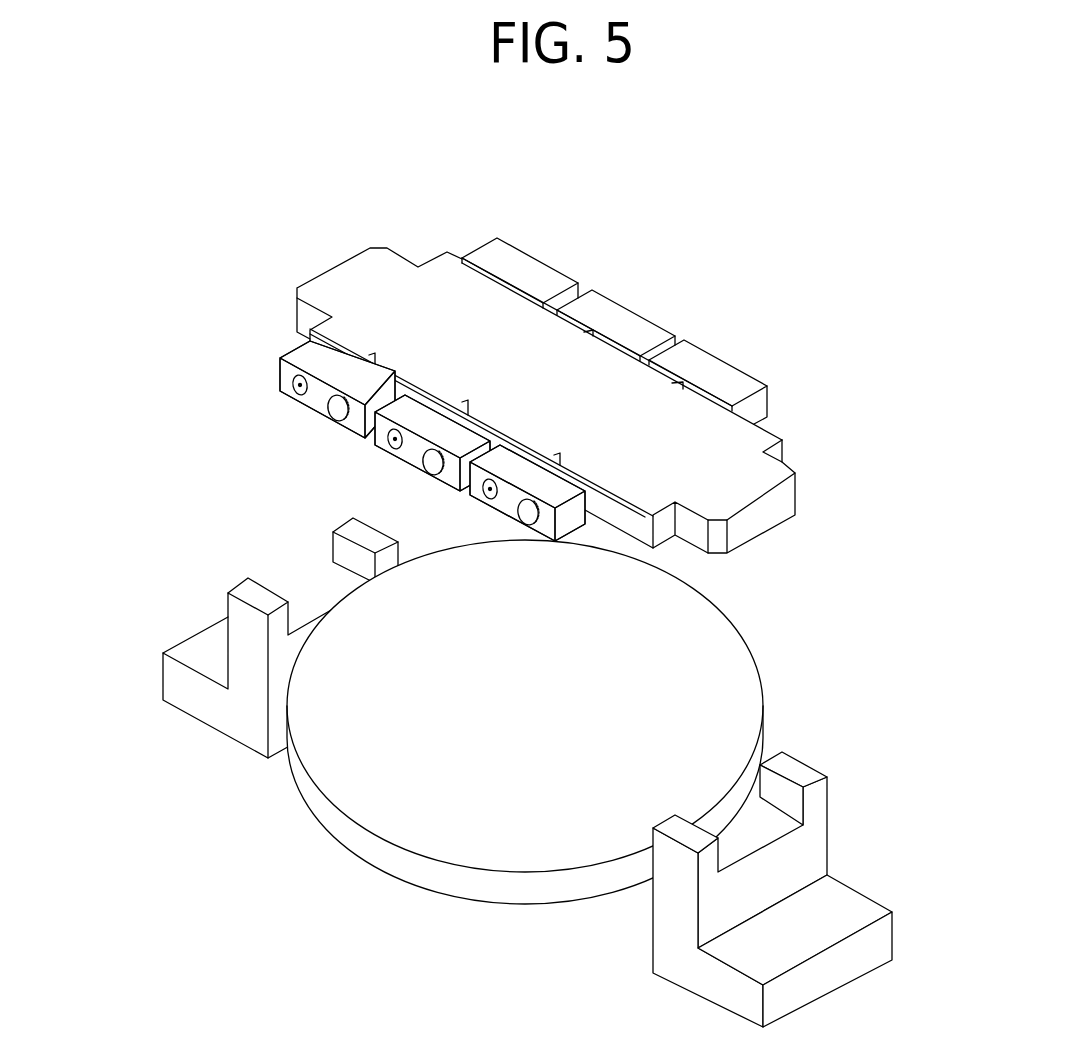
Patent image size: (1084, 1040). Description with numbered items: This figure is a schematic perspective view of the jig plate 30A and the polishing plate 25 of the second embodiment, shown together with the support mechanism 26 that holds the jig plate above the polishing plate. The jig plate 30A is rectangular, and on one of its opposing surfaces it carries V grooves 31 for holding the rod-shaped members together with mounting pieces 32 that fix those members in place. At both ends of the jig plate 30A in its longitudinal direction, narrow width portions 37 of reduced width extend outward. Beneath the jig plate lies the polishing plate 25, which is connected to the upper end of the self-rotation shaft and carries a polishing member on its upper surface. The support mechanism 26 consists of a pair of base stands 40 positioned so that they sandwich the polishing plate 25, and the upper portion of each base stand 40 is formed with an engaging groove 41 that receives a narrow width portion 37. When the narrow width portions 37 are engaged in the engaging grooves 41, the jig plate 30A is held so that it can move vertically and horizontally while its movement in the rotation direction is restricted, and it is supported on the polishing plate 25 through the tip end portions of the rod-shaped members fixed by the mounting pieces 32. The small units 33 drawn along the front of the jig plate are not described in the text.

The polishing plate 25 is at (510, 843).
The support mechanism 26 is at (219, 580).
The jig plate 30A is at (496, 338).
The V groove 31 is at (690, 380).
The mounting piece 32 is at (627, 321).
The roller unit 33 is at (514, 516).
The narrow width portion 37 is at (348, 280).
The base stand 40 is at (204, 651).
The engaging groove 41 is at (322, 590).